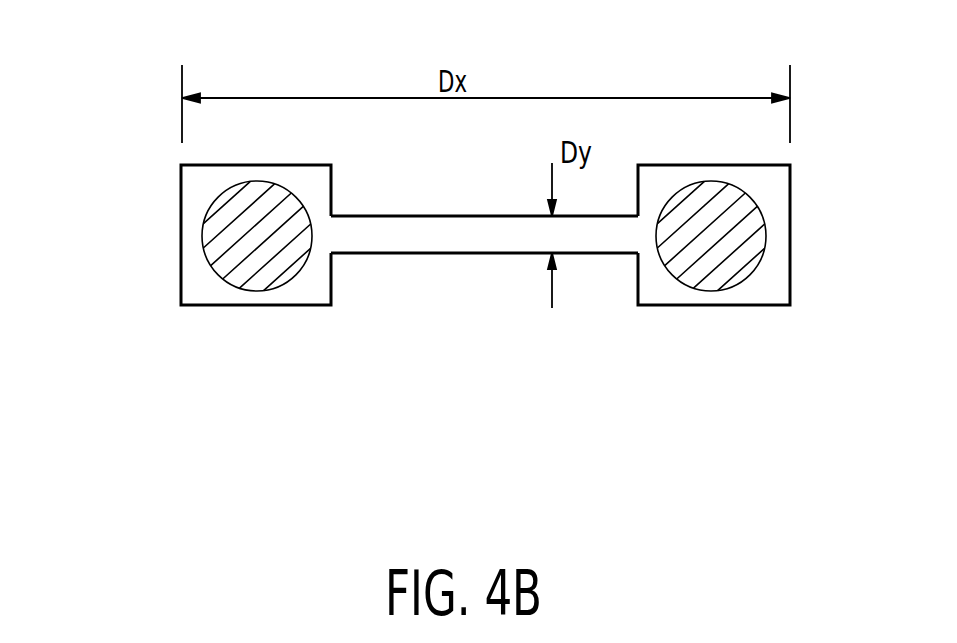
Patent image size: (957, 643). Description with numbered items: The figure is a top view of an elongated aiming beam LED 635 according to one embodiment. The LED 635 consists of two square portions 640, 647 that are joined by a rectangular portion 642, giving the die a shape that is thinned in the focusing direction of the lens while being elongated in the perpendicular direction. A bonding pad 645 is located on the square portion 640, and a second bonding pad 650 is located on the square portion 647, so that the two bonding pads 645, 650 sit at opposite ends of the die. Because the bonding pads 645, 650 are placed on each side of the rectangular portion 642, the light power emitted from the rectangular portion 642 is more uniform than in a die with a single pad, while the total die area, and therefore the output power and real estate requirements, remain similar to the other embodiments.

The LED 635 is at (473, 284).
The square portion 640 is at (193, 295).
The rectangular portion 642 is at (453, 216).
The bonding pad 645 is at (202, 220).
The square portion 647 is at (765, 295).
The bonding pad 650 is at (757, 203).